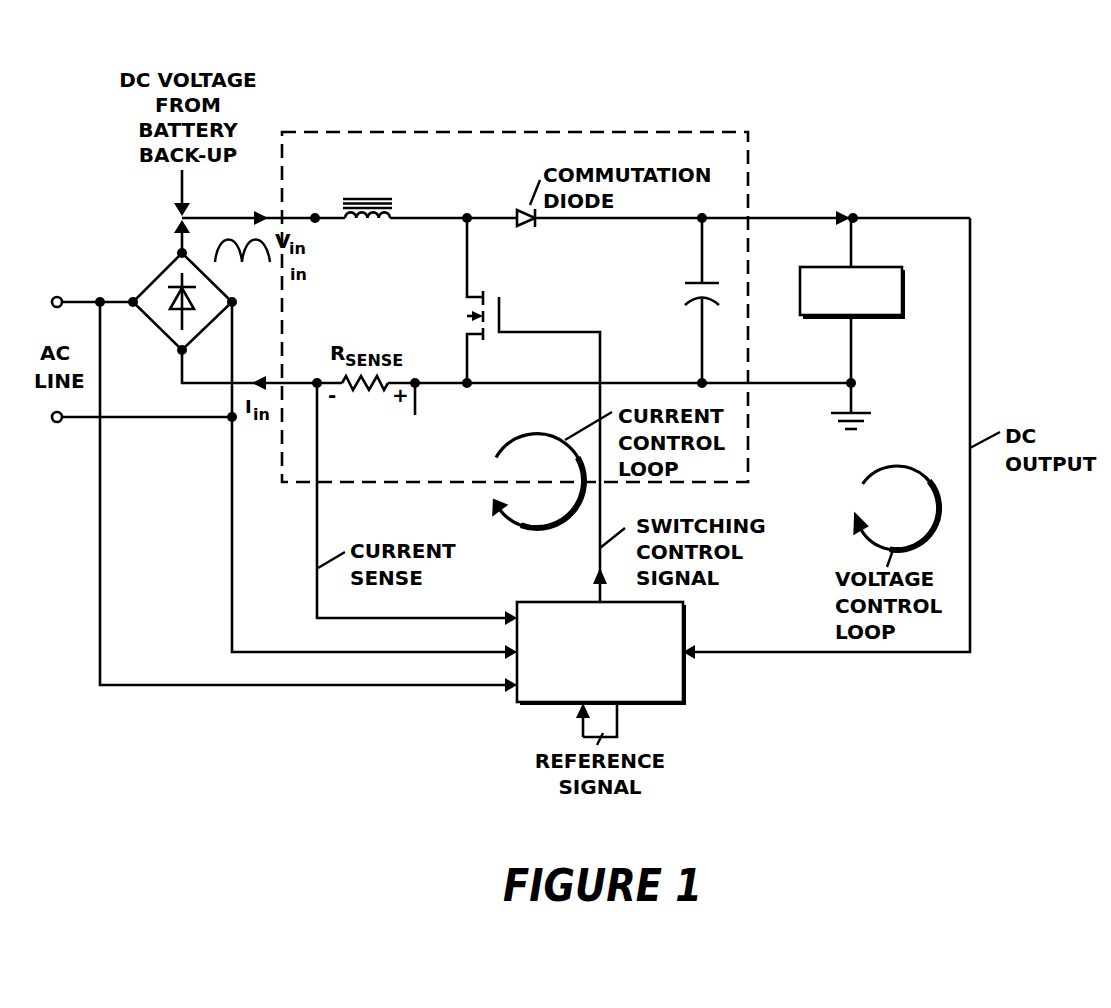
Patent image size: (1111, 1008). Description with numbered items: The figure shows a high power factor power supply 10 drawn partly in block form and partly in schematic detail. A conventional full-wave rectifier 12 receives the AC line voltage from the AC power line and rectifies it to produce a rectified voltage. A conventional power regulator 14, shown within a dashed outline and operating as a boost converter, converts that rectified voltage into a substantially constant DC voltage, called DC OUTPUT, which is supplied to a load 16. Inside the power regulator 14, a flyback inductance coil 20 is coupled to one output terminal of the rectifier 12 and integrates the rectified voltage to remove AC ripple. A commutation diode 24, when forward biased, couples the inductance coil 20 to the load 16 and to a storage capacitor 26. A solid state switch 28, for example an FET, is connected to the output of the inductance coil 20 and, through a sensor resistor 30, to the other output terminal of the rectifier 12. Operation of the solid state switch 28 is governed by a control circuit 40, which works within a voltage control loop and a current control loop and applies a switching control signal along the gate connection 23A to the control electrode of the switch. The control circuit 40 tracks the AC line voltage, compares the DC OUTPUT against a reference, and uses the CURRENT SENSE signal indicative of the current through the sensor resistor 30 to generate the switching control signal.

The HPF power supply 10 is at (875, 96).
The full-wave rectifier 12 is at (152, 284).
The power regulator 14 is at (411, 128).
The load 16 is at (885, 320).
The flyback inductance coil 20 is at (342, 200).
The switching control signal gate line 23A is at (536, 331).
The commutation diode 24 is at (528, 225).
The storage capacitor 26 is at (686, 292).
The solid state switch 28 is at (460, 317).
The sensor resistor 30 is at (371, 396).
The control circuit 40 is at (589, 689).